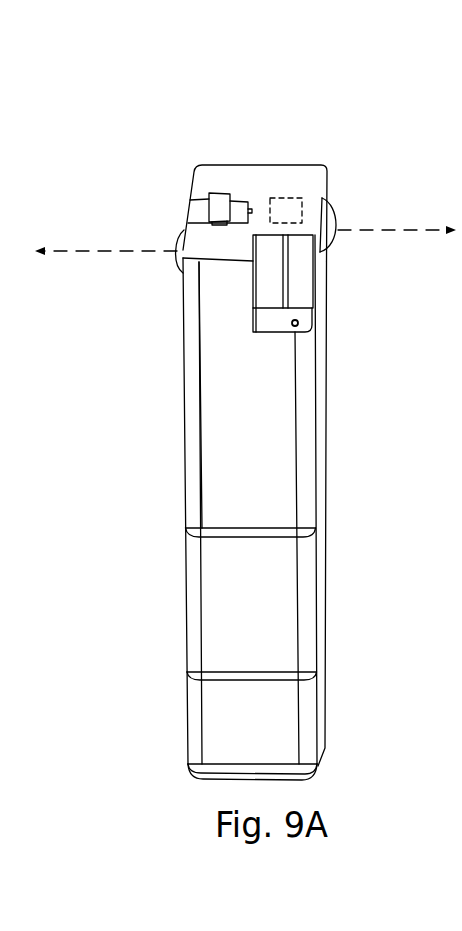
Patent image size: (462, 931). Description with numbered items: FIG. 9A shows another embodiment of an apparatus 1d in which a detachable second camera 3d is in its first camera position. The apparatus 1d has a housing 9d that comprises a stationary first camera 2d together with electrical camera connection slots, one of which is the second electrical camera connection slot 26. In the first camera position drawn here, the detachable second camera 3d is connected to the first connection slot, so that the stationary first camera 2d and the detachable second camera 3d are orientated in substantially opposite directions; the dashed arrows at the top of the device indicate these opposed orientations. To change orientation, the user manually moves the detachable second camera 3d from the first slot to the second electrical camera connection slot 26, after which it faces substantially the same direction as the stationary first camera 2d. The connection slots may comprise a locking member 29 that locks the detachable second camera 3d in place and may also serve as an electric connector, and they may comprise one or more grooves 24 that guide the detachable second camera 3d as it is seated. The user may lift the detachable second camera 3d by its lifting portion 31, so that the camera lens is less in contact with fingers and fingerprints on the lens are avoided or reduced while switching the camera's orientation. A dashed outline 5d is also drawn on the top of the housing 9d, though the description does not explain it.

The apparatus 1d is at (138, 377).
The housing 9d is at (303, 162).
The lifting portion 31 is at (219, 205).
The sensor region 5d is at (273, 200).
The stationary first camera 2d is at (357, 230).
The detachable second camera 3d is at (177, 247).
The grooves 24 is at (253, 290).
The second electrical camera connection slot 26 is at (300, 287).
The locking member 29 is at (298, 323).